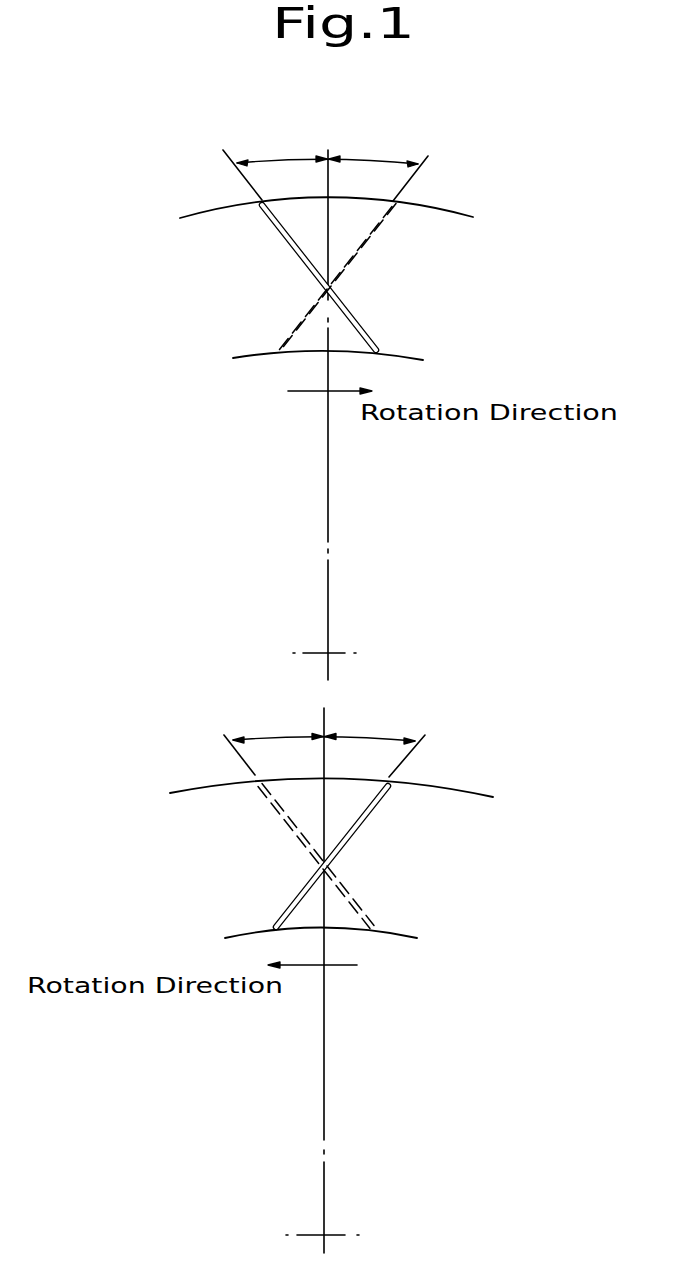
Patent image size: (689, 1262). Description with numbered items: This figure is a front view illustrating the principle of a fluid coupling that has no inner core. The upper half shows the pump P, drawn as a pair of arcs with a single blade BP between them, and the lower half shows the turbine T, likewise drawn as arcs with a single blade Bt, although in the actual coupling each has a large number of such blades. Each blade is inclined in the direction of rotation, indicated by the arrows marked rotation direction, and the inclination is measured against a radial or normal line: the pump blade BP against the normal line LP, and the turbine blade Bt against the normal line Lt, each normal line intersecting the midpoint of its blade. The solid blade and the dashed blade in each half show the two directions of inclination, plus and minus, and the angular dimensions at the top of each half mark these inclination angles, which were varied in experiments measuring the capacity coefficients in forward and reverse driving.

The pump P is at (460, 210).
The pump blade BP is at (288, 251).
The pump normal line LP is at (328, 458).
The turbine T is at (481, 777).
The turbine blade Bt is at (367, 817).
The turbine normal line Lt is at (324, 1040).